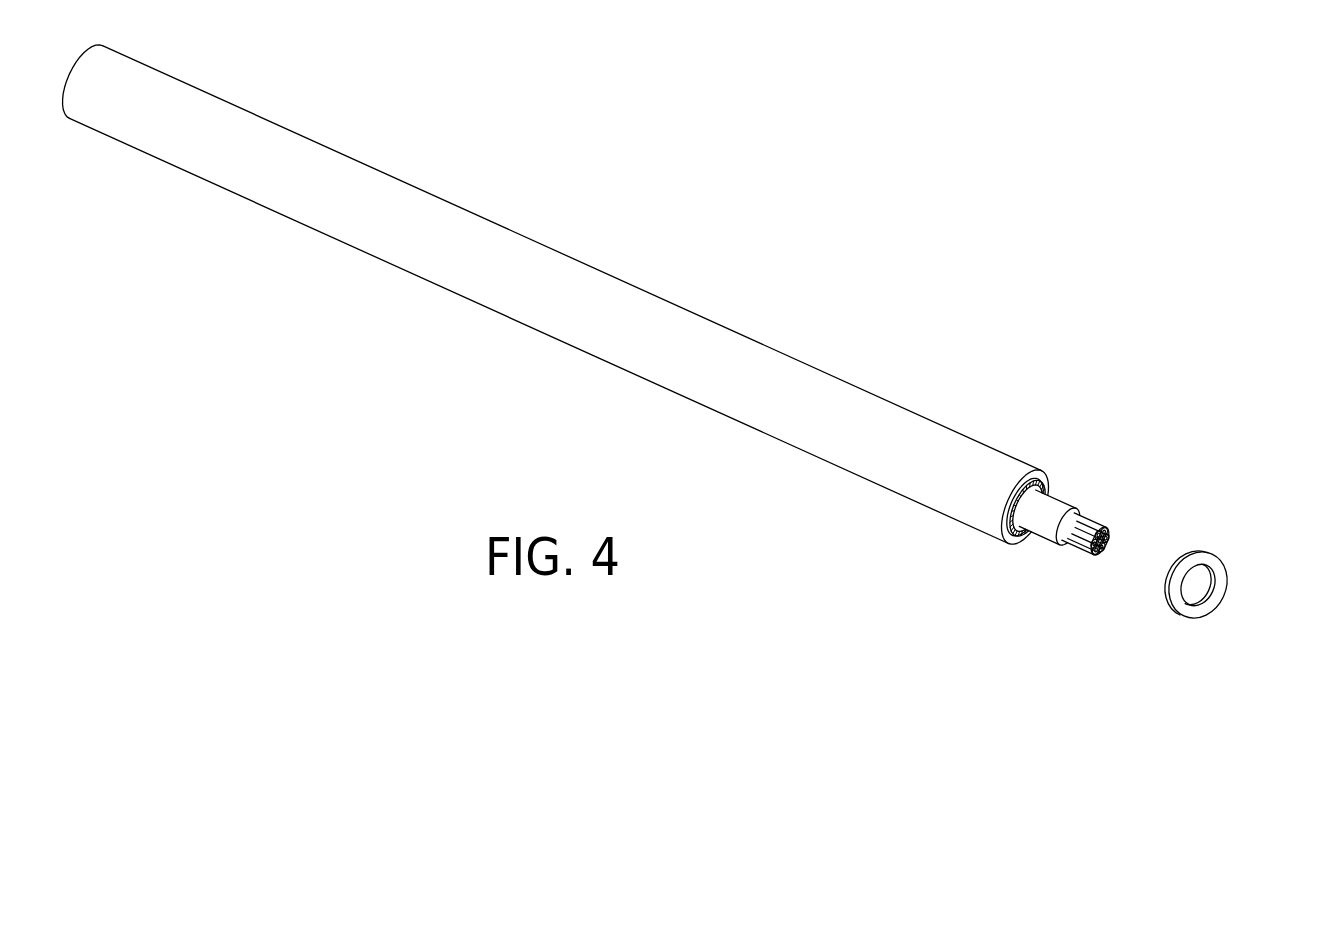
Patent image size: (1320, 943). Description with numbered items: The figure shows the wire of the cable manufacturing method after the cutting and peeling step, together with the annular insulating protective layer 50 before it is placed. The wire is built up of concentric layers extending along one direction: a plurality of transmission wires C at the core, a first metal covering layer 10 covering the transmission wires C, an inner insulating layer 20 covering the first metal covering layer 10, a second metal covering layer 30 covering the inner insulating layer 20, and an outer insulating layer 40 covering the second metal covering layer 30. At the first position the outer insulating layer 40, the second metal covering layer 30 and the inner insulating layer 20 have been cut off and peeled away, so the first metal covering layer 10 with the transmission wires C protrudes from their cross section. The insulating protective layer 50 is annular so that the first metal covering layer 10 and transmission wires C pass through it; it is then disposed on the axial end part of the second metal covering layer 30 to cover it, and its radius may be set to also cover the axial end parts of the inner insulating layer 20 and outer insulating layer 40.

The outer insulating layer 40 is at (1045, 482).
The second metal covering layer 30 is at (1038, 492).
The inner insulating layer 20 is at (1022, 537).
The first metal covering layer 10 is at (1053, 539).
The transmission wires C is at (1100, 548).
The insulating protective layer 50 is at (1202, 552).